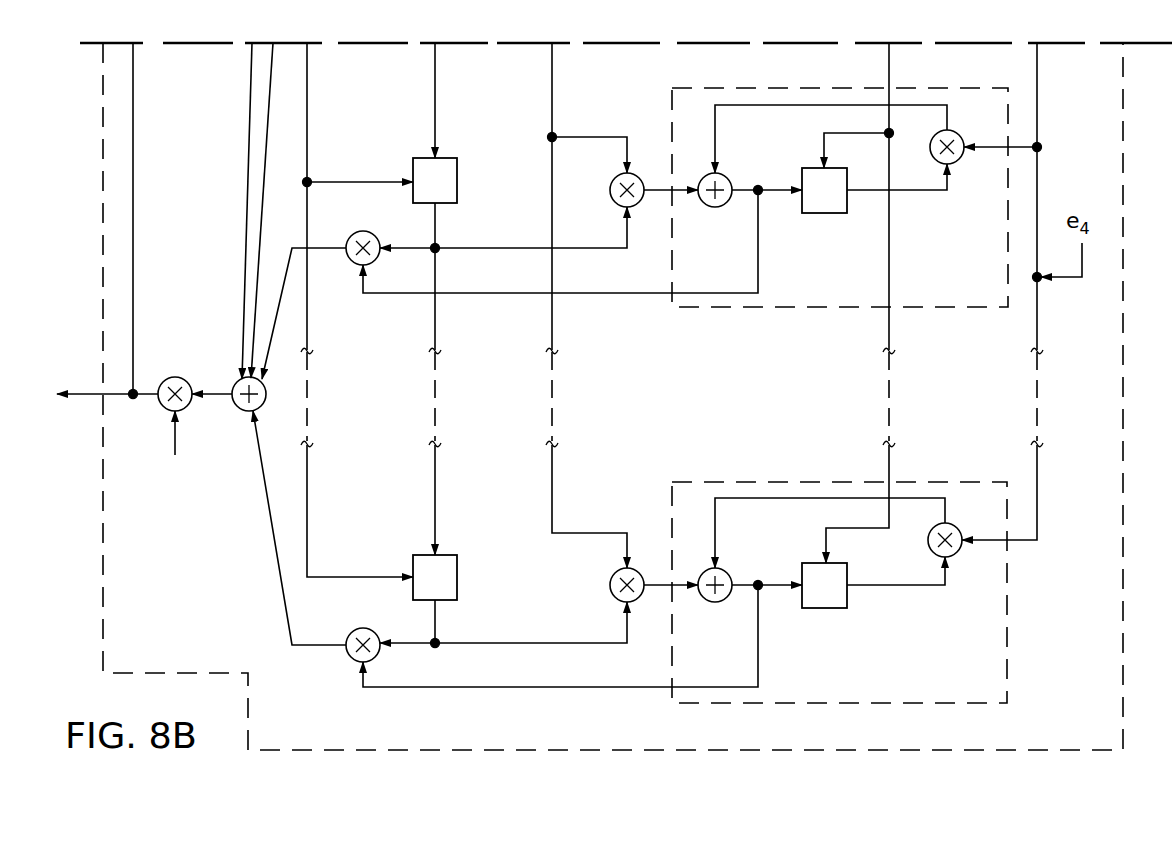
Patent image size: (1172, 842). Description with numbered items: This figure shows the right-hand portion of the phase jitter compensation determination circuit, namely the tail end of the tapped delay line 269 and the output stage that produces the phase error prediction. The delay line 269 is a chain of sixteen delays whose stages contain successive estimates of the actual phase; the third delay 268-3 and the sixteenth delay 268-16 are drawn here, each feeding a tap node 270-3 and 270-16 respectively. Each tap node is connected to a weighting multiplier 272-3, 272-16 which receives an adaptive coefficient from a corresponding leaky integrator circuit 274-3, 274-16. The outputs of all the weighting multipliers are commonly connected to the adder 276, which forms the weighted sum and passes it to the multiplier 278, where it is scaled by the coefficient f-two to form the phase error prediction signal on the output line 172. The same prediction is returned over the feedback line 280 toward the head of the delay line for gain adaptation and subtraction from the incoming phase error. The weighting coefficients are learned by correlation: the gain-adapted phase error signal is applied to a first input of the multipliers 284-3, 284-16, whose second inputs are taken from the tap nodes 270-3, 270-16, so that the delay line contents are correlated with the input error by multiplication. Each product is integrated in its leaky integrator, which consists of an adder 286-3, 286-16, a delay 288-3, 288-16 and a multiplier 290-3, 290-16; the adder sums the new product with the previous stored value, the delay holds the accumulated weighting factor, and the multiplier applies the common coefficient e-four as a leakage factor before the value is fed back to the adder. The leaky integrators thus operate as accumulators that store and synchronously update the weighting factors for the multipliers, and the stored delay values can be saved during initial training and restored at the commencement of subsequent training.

The output line 172 is at (88, 385).
The tapped delay line 269 is at (419, 320).
The delay 268-3 is at (450, 170).
The delay 268-16 is at (448, 563).
The tap node 270-3 is at (440, 251).
The tap node 270-16 is at (440, 644).
The multiplier 272-3 is at (378, 217).
The multiplier 272-16 is at (376, 604).
The leaky integrator circuit 274-3 is at (815, 307).
The leaky integrator circuit 274-16 is at (818, 482).
The adder 276 is at (238, 378).
The multiplier 278 is at (167, 408).
The feedback line 280 is at (133, 278).
The multiplier 284-3 is at (635, 175).
The multiplier 284-16 is at (635, 573).
The adder 286-3 is at (708, 205).
The adder 286-16 is at (720, 572).
The delay 288-3 is at (808, 207).
The delay 288-16 is at (823, 610).
The multiplier 290-3 is at (957, 163).
The multiplier 290-16 is at (955, 555).